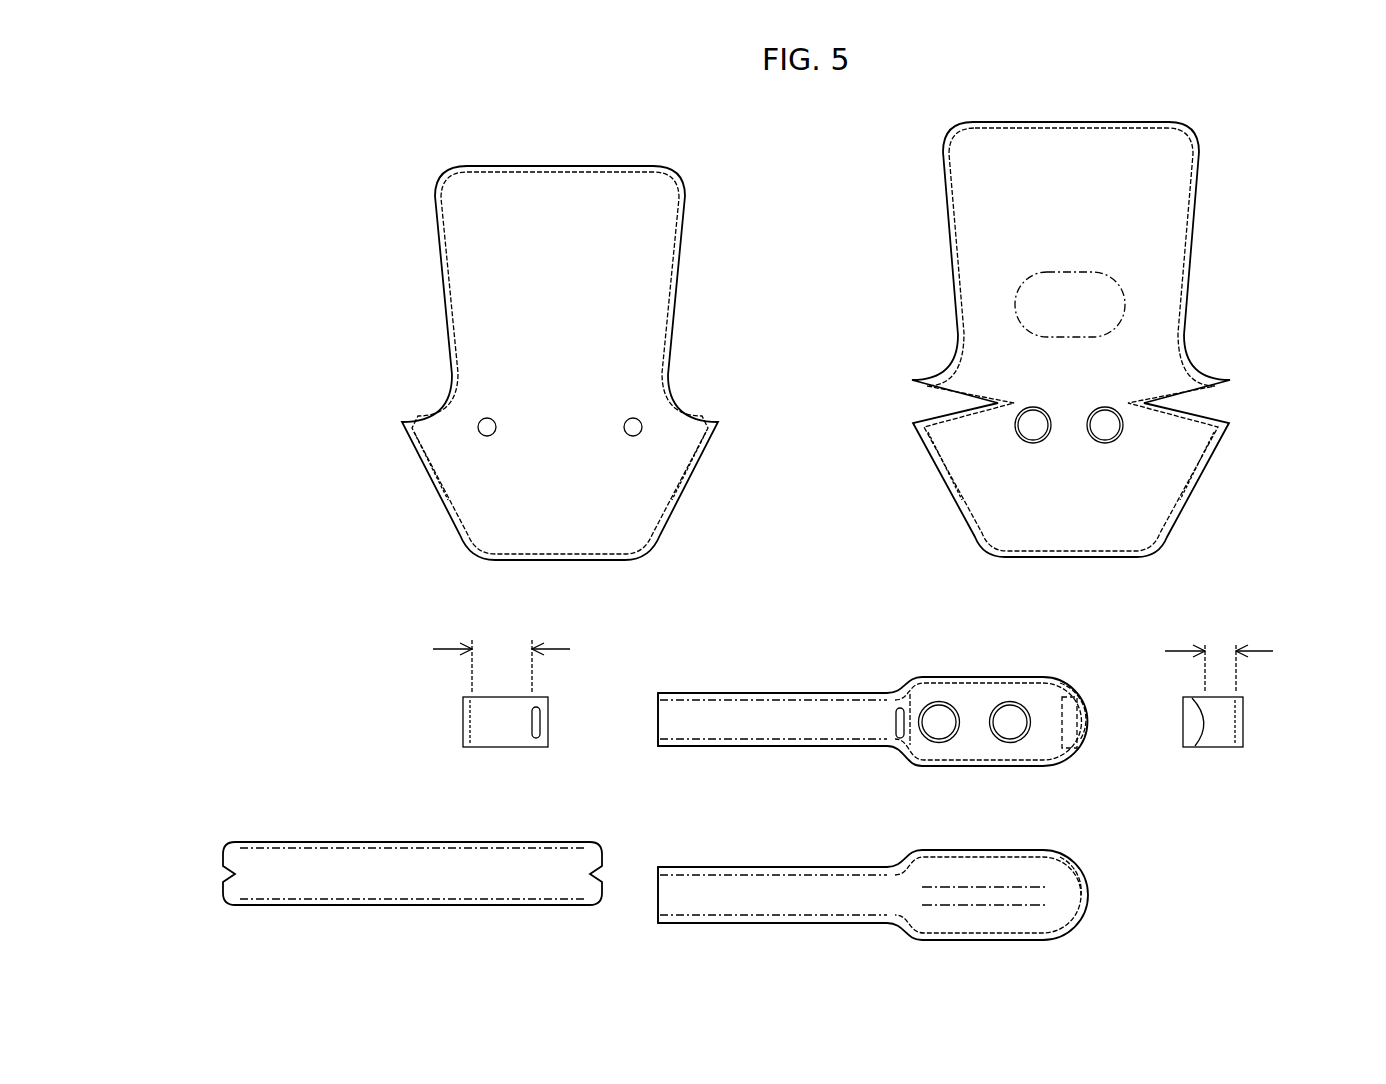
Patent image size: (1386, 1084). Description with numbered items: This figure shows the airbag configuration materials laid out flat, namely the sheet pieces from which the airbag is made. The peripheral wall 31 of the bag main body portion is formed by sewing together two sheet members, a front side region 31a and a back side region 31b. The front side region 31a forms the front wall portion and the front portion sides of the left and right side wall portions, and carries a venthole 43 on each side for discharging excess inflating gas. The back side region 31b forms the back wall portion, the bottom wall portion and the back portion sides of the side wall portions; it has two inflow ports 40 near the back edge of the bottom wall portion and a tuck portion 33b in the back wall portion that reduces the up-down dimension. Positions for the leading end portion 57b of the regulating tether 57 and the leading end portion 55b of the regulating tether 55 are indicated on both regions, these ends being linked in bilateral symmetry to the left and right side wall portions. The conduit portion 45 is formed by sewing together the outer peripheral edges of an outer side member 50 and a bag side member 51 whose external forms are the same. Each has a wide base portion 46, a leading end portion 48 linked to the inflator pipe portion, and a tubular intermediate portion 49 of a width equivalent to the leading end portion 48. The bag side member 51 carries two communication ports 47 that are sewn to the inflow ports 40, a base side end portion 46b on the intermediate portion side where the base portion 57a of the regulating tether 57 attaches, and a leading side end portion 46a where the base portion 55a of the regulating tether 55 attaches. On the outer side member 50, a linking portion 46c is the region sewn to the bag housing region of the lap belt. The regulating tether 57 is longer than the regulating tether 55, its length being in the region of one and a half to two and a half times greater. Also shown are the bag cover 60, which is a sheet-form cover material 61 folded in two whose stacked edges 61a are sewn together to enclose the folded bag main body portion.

The peripheral wall 31 is at (883, 195).
The front side region 31a is at (697, 260).
The back side region 31b is at (921, 258).
The venthole 43 is at (487, 427).
The inflow port 40 is at (1030, 418).
The tuck portion 33b is at (1085, 295).
The leading end portion 57b is at (413, 452).
The leading end portion 55b is at (707, 442).
The conduit portion 45 is at (875, 583).
The outer side member 50 is at (737, 838).
The bag side member 51 is at (847, 688).
The base side end portion 46b is at (900, 677).
The communication port 47 is at (939, 722).
The base portion 57a is at (540, 752).
The leading side end portion 46a is at (1083, 680).
The base portion 55a is at (1087, 723).
The base portion 46 is at (1020, 772).
The linking portion 46c is at (1052, 907).
The leading end portion 48 is at (695, 757).
The intermediate portion 49 is at (808, 758).
The regulating tether 57 is at (445, 710).
The regulating tether 55 is at (1253, 690).
The cover material 61 is at (237, 830).
The bag cover 60 is at (389, 838).
The edges 61a is at (330, 842).